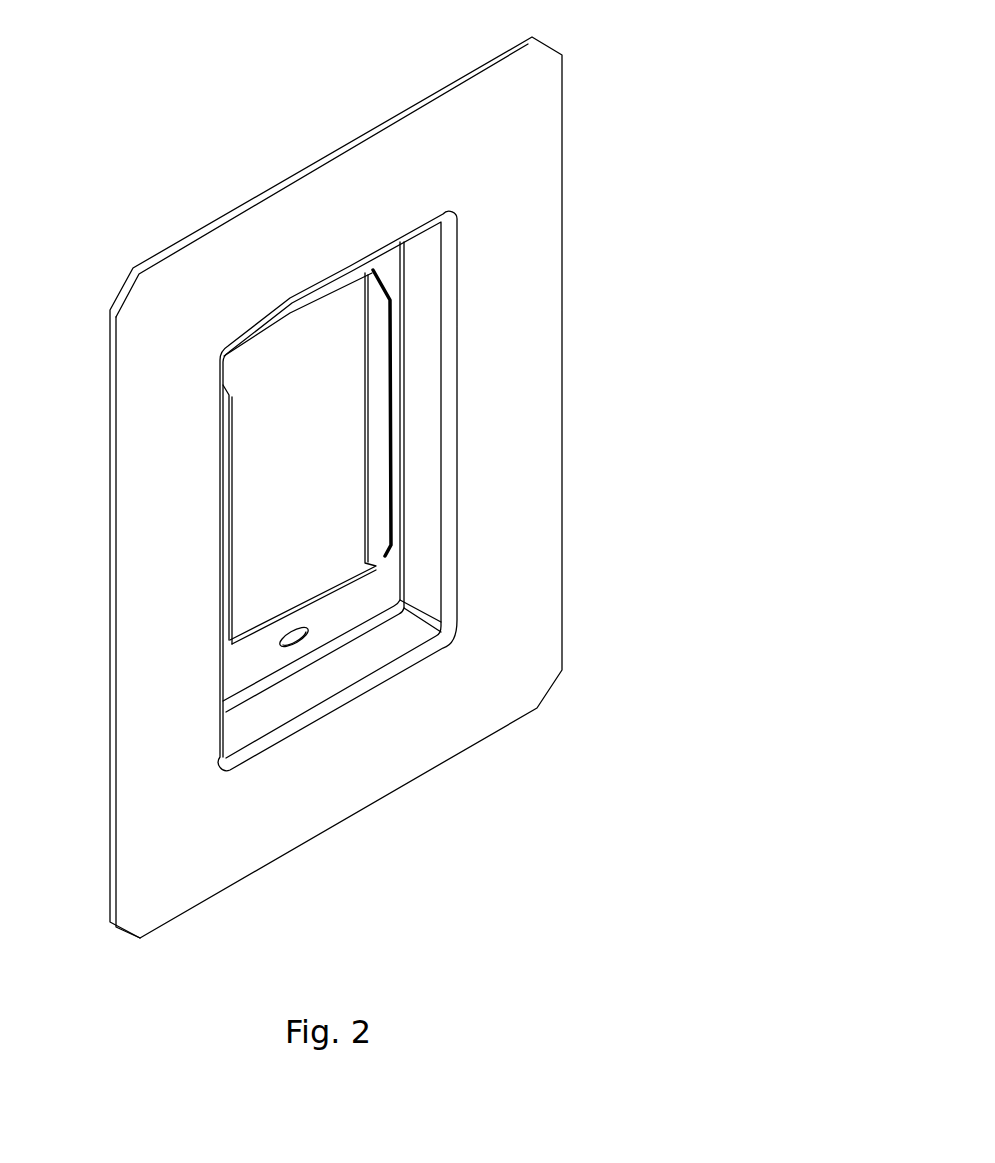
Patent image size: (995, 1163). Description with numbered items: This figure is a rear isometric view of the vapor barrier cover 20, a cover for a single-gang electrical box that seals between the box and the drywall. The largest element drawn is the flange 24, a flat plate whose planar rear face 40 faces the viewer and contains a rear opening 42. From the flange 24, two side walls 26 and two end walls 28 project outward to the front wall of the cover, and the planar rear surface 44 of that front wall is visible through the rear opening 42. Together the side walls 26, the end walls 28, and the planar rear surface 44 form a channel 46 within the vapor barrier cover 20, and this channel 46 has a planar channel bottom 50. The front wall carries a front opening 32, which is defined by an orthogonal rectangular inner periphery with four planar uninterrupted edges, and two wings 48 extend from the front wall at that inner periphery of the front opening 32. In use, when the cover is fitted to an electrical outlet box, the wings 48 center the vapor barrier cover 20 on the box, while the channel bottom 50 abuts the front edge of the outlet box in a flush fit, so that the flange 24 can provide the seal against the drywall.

The vapor barrier cover 20 is at (140, 171).
The flange 24 is at (523, 102).
The side walls 26 is at (425, 365).
The end walls 28 is at (396, 655).
The front opening 32 is at (329, 472).
The planar rear face 40 is at (275, 270).
The rear opening 42 is at (447, 497).
The planar rear surface 44 is at (253, 663).
The channel 46 is at (398, 420).
The wings 48 is at (378, 345).
The planar channel bottom 50 is at (387, 268).